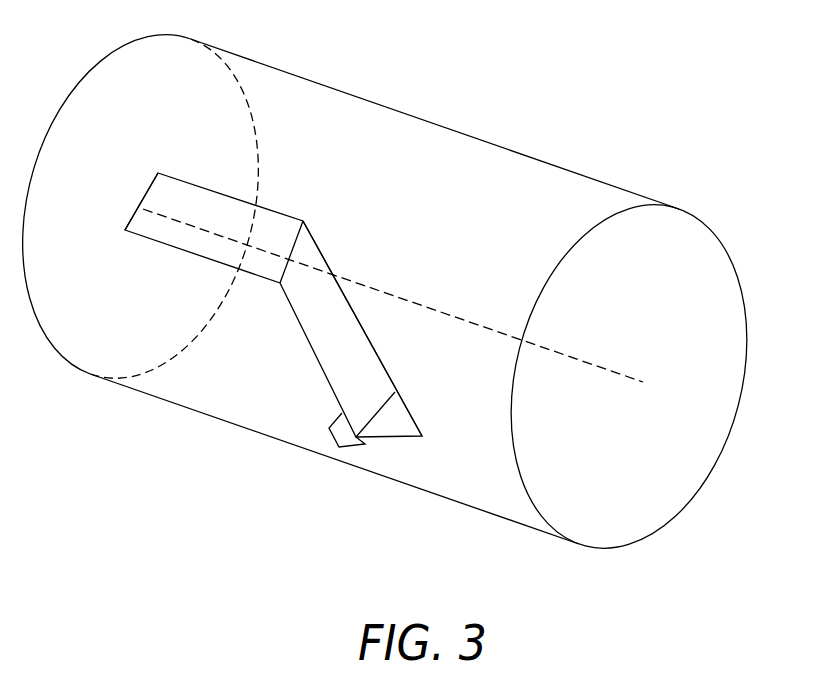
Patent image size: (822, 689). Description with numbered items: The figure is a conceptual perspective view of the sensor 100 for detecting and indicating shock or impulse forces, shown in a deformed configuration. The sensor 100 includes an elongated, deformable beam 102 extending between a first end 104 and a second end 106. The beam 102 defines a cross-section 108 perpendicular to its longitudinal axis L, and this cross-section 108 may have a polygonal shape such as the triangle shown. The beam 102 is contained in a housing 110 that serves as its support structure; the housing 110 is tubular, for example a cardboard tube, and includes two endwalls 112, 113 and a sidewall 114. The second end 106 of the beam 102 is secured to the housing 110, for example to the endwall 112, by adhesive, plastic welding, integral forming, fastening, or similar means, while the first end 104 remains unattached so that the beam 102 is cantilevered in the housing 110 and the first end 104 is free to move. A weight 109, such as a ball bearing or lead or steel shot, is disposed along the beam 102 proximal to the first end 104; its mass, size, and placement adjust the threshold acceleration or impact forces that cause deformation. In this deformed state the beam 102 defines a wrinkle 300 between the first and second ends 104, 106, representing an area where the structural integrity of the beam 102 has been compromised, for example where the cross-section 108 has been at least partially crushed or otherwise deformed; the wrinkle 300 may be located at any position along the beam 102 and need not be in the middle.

The sensor 100 is at (407, 304).
The deformable beam 102 is at (297, 321).
The first end 104 is at (388, 440).
The second end 106 is at (125, 232).
The cross-section 108 is at (414, 406).
The weight 109 is at (330, 423).
The housing 110 is at (407, 304).
The endwall 112 is at (228, 132).
The endwall 113 is at (723, 299).
The sidewall 114 is at (378, 105).
The wrinkle 300 is at (305, 221).
The longitudinal axis L is at (602, 370).